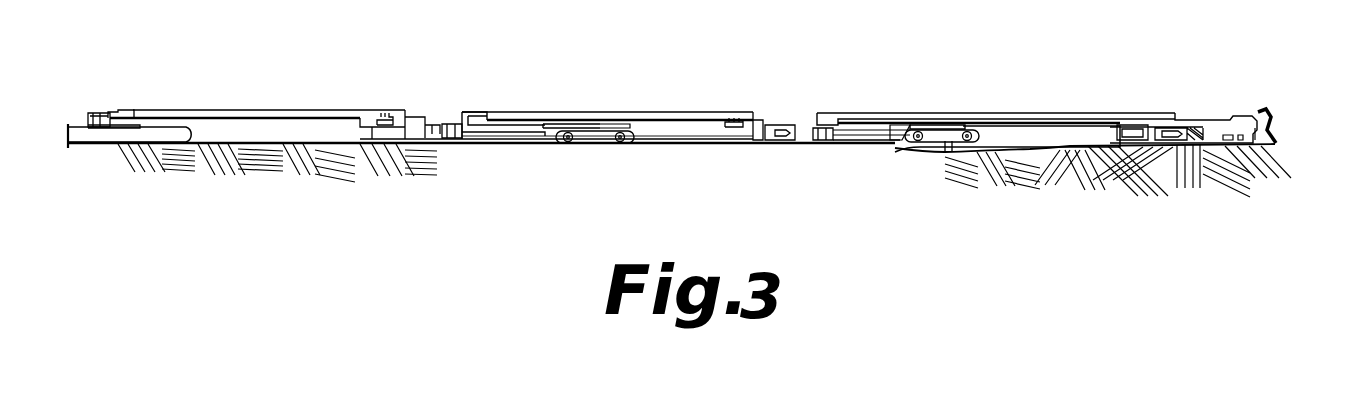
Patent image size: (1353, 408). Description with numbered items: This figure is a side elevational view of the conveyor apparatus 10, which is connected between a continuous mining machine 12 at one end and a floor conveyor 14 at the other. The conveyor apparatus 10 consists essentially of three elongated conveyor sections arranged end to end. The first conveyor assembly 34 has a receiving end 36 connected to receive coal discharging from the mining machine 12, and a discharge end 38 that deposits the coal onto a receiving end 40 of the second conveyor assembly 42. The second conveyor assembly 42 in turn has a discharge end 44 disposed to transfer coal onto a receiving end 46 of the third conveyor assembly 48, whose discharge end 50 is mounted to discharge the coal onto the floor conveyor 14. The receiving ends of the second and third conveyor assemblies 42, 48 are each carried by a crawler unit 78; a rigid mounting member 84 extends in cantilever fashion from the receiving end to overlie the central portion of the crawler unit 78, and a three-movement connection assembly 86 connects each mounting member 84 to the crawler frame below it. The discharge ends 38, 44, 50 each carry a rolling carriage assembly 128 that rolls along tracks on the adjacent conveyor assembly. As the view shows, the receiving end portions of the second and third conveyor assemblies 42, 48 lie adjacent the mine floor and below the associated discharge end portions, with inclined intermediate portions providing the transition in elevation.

The conveyor apparatus 10 is at (748, 94).
The continuous mining machine 12 is at (1266, 114).
The floor conveyor 14 is at (100, 143).
The first conveyor assembly 34 is at (1094, 106).
The receiving end 36 is at (1228, 115).
The discharge end 38 is at (842, 112).
The receiving end 40 is at (892, 142).
The second conveyor assembly 42 is at (650, 112).
The discharge end 44 is at (477, 110).
The receiving end 46 is at (530, 137).
The third conveyor assembly 48 is at (233, 110).
The discharge end 50 is at (130, 111).
The crawler unit 78 is at (604, 144).
The mounting member 84 is at (581, 122).
The connection assembly 86 is at (606, 127).
The rolling carriage assembly 128 is at (100, 114).